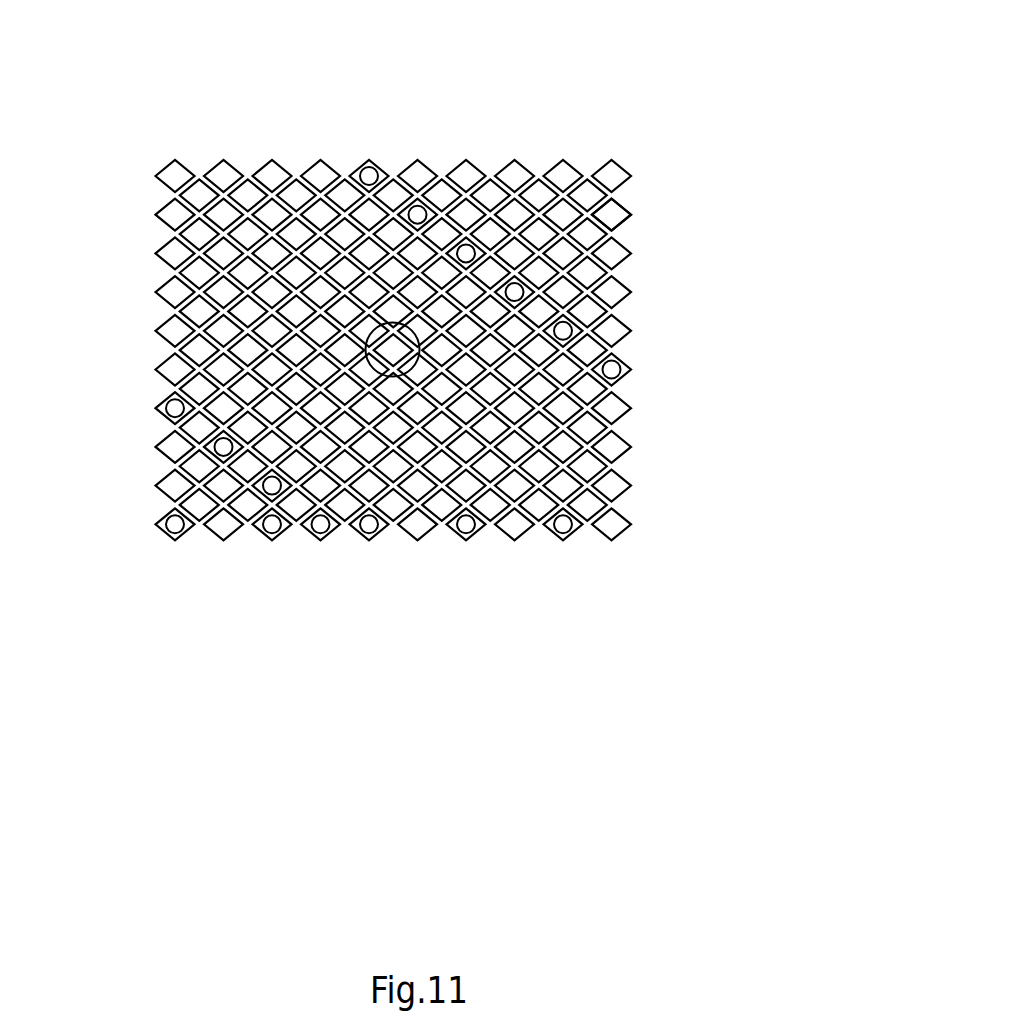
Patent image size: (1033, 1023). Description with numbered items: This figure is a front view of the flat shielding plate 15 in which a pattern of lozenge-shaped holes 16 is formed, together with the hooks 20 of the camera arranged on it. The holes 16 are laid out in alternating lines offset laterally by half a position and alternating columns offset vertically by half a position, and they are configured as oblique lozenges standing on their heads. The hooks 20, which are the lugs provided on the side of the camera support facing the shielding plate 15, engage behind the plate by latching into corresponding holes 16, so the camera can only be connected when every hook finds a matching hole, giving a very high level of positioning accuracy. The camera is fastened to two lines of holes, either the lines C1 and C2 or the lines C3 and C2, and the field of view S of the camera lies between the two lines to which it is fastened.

The shielding plate 15 is at (608, 140).
The lozenge-shaped hole 16 is at (627, 210).
The hook 20 is at (403, 359).
The first line of holes C1 is at (628, 523).
The second line of holes C2 is at (348, 152).
The third line of holes C3 is at (145, 380).
The field of view S is at (414, 366).